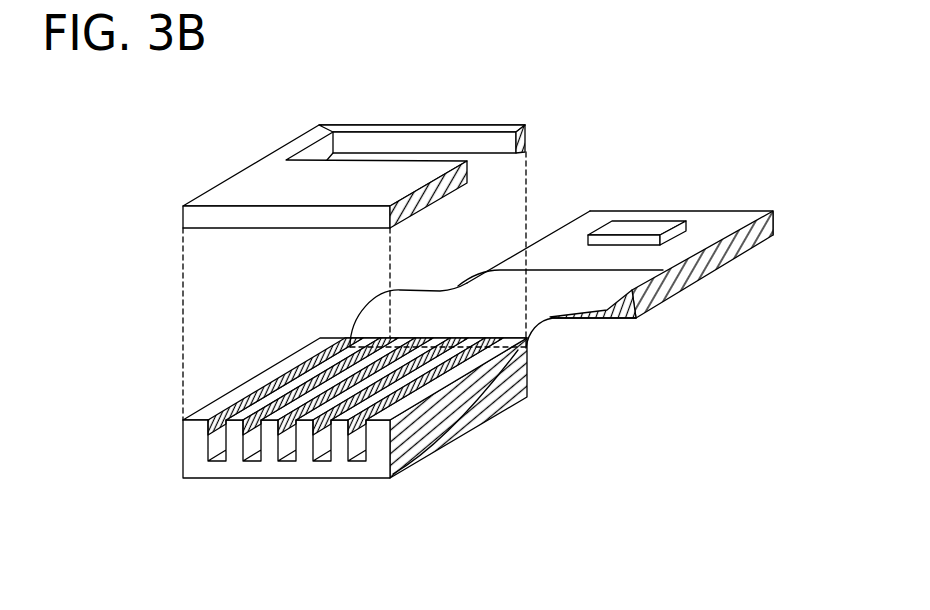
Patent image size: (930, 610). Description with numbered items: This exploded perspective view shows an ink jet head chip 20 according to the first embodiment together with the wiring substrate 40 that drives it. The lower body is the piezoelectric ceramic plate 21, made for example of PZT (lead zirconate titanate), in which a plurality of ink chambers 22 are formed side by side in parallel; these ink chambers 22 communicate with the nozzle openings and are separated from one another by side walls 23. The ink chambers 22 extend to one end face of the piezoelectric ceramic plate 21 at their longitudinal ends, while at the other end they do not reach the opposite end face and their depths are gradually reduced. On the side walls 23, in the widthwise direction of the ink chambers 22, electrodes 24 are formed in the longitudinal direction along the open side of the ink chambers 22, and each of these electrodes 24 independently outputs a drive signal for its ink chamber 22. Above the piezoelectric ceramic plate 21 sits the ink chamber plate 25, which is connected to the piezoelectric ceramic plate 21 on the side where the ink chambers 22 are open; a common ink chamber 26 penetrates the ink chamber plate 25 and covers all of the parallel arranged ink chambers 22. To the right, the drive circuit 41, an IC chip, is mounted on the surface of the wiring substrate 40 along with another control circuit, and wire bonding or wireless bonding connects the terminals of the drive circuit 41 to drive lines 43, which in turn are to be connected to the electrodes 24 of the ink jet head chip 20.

The ink jet head chip 20 is at (568, 67).
The piezoelectric ceramic plate 21 is at (195, 445).
The ink chambers 22 is at (217, 449).
The side walls 23 is at (235, 448).
The electrodes 24 is at (222, 419).
The ink chamber plate 25 is at (248, 186).
The common ink chamber 26 is at (425, 140).
The wiring substrate 40 is at (697, 237).
The drive circuit 41 is at (638, 228).
The drive lines 43 is at (560, 300).